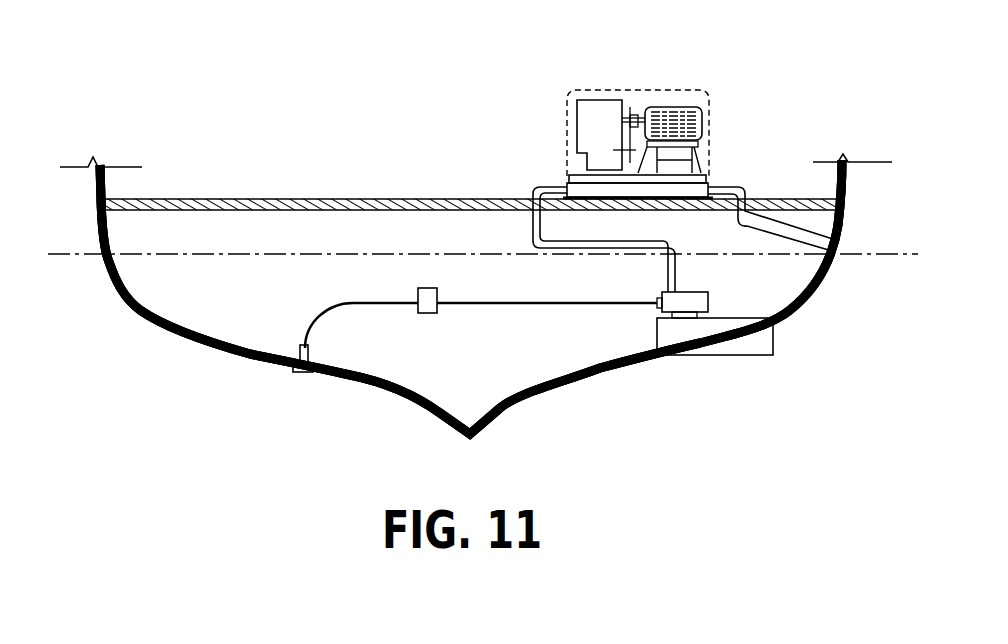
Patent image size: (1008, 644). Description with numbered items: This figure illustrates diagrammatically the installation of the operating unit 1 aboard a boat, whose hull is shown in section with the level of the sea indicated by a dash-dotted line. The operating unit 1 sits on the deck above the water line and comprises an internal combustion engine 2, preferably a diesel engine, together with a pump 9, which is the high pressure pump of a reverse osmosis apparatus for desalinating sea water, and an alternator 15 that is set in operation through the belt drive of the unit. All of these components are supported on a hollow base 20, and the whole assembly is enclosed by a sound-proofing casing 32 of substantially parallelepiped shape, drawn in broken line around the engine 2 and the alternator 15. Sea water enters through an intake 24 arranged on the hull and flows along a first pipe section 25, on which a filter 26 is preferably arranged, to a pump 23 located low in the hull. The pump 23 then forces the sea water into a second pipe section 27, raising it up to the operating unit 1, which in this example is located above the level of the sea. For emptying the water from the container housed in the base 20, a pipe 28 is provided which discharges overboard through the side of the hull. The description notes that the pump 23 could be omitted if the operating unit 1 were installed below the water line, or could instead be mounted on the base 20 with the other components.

The operating unit 1 is at (733, 37).
The internal combustion engine 2 is at (609, 135).
The pump 9 is at (673, 160).
The alternator 15 is at (702, 121).
The base 20 is at (585, 193).
The pump 23 is at (702, 305).
The intake 24 is at (295, 371).
The first pipe section 25 is at (327, 313).
The filter 26 is at (432, 313).
The second pipe section 27 is at (533, 228).
The pipe 28 is at (737, 231).
The sound-proofing casing 32 is at (596, 90).